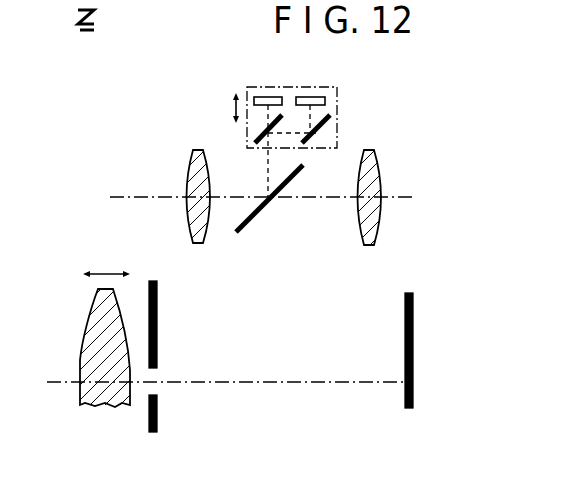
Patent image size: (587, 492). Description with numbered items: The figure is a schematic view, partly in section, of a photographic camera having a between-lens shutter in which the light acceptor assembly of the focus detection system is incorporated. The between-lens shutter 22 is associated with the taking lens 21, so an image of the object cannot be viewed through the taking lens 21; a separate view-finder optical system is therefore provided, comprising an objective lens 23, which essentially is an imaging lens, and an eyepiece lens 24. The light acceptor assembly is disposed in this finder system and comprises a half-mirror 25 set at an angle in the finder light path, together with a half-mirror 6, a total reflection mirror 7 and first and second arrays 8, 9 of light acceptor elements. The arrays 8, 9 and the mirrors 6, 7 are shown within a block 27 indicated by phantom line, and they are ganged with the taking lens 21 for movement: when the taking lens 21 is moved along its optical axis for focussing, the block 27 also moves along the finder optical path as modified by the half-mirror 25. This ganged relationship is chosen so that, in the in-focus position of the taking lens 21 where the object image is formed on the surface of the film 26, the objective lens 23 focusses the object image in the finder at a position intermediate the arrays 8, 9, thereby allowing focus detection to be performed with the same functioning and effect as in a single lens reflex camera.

The half-mirror 6 is at (251, 138).
The total reflection mirror 7 is at (333, 122).
The first array of light acceptor elements 8 is at (262, 97).
The second array of light acceptor elements 9 is at (306, 97).
The taking lens 21 is at (90, 326).
The between-lens shutter 22 is at (157, 310).
The objective lens 23 is at (189, 176).
The eyepiece lens 24 is at (380, 172).
The half-mirror 25 is at (259, 212).
The film 26 is at (413, 318).
The block 27 is at (338, 108).